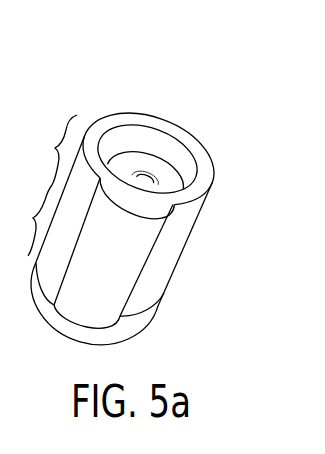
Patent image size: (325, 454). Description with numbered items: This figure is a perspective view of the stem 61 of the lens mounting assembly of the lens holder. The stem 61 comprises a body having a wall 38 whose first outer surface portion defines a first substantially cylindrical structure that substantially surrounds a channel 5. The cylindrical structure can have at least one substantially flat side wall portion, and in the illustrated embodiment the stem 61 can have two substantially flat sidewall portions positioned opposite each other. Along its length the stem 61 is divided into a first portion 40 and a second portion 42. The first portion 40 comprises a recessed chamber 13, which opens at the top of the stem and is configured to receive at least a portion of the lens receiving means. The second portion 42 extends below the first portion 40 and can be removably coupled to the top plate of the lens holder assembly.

The stem 61 is at (99, 100).
The recessed chamber 13 is at (133, 160).
The channel 5 is at (139, 181).
The wall 38 is at (200, 164).
The first portion 40 is at (51, 150).
The second portion 42 is at (28, 220).